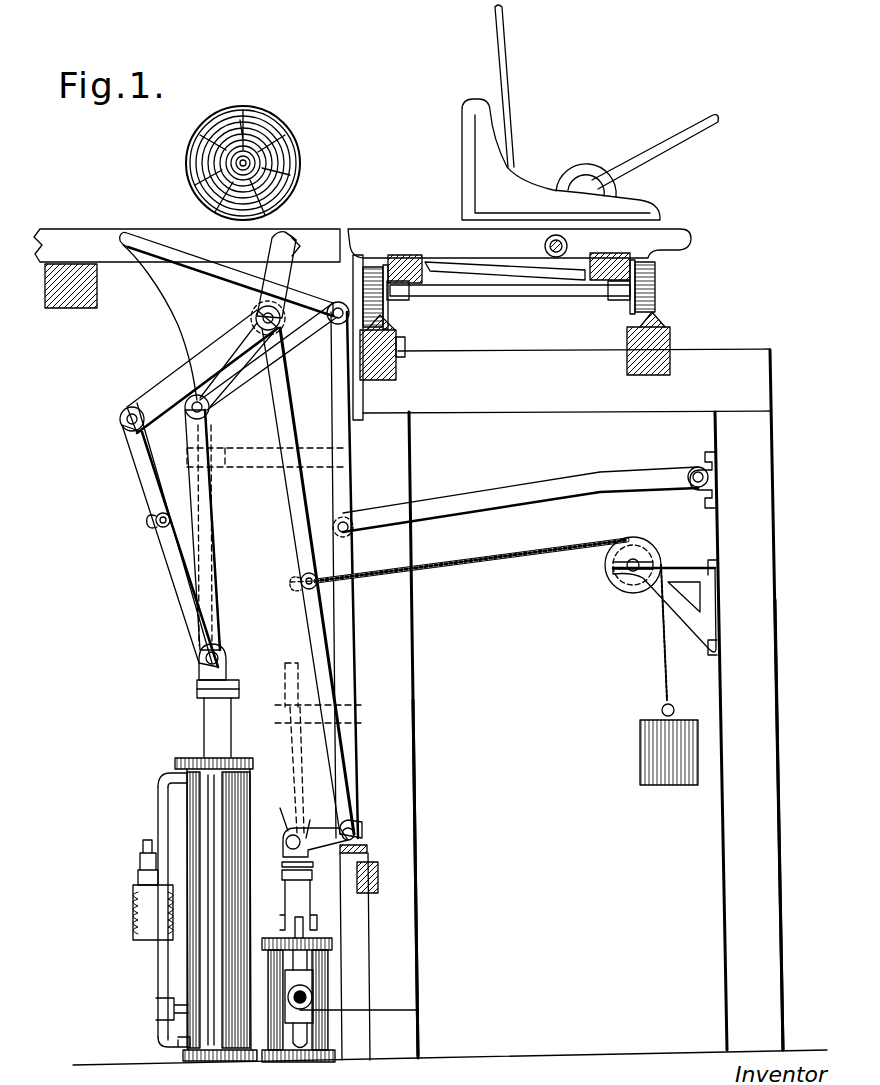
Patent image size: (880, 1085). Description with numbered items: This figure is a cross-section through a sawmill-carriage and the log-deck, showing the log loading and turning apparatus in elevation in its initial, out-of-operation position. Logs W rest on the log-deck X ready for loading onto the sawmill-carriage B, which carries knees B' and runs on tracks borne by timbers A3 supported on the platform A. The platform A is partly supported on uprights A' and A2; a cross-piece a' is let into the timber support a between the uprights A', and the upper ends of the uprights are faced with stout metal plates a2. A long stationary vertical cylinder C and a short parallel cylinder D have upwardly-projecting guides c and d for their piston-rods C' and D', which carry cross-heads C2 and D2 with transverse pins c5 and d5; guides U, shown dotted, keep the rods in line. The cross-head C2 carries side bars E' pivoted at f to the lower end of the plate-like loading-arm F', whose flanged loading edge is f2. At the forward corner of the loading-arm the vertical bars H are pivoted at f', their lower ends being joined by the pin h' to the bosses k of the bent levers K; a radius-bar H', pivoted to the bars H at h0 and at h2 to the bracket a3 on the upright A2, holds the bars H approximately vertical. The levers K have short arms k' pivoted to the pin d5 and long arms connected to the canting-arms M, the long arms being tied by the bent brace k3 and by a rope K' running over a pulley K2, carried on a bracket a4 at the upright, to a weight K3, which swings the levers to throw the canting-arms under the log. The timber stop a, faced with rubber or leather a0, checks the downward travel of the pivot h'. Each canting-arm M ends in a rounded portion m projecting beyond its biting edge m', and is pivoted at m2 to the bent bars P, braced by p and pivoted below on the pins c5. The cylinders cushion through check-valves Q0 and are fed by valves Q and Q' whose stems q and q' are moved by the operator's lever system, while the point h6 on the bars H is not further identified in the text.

The log W is at (289, 146).
The log-deck X is at (58, 244).
The sawmill-carriage B is at (523, 262).
The knees B' is at (571, 112).
The timbers A3 is at (384, 362).
The platform A is at (450, 707).
The metal plates a2 is at (364, 401).
The uprights A' is at (435, 855).
The upright A2 is at (765, 682).
The feed bar F' is at (226, 274).
The loading edge f2 is at (172, 254).
The biting edge m' is at (304, 259).
The rounded portion m is at (295, 229).
The canting-arms M is at (161, 394).
The pivot m2 is at (120, 419).
The pivot h0 is at (262, 316).
The pivot f' is at (274, 341).
The pivot f is at (229, 381).
The bent levers K is at (308, 581).
The vertical bars H is at (330, 575).
The guides U is at (218, 476).
The bar E' is at (215, 530).
The bent bars P is at (145, 480).
The bent brace p is at (151, 530).
The radius-bar H' is at (520, 497).
The pivot h6 is at (352, 522).
The pivot h2 is at (692, 474).
The bracket a3 is at (712, 480).
The rope K' is at (458, 579).
The bent brace k3 is at (292, 592).
The pulley K2 is at (616, 590).
The bracket a4 is at (662, 583).
The weight K3 is at (648, 758).
The transverse pins c5 is at (205, 658).
The cross-head C2 is at (227, 666).
The piston-rod C' is at (231, 688).
The guide c is at (217, 727).
The long stationary cylinder C is at (221, 909).
The valve-stem q is at (145, 905).
The valve Q is at (132, 921).
The check-valves Q0 is at (158, 1046).
The cross-head D2 is at (283, 846).
The transverse pin d5 is at (279, 808).
The short arms k' is at (315, 821).
The pin h' is at (366, 814).
The bosses k is at (388, 811).
The rubber or leather facing a0 is at (369, 847).
The cross-piece a' is at (398, 878).
The timber-support a is at (355, 956).
The piston-rod D' is at (351, 864).
The guide d is at (298, 905).
The valve-stem q' is at (276, 920).
The short cylinder D is at (330, 1000).
The valve Q' is at (376, 1017).